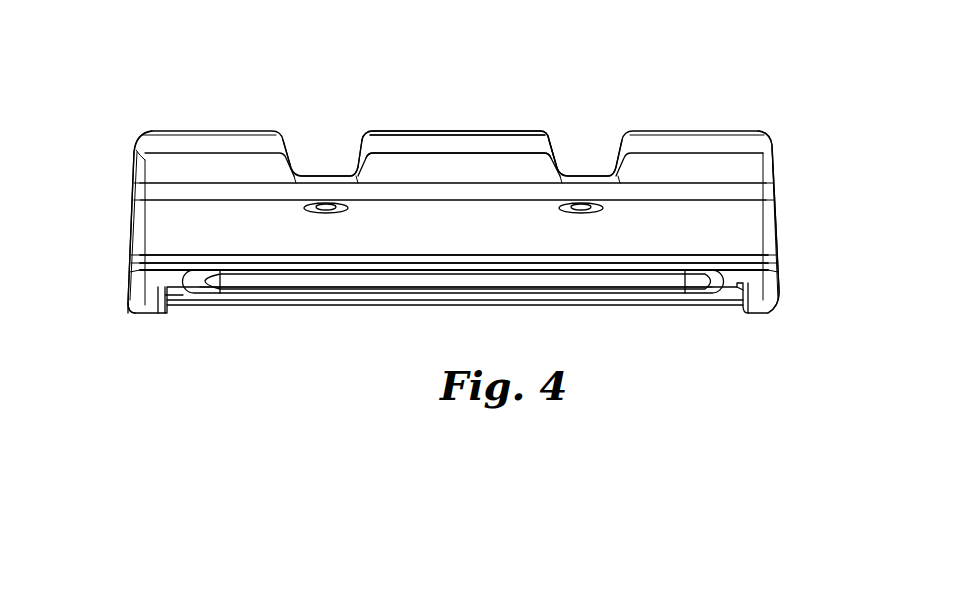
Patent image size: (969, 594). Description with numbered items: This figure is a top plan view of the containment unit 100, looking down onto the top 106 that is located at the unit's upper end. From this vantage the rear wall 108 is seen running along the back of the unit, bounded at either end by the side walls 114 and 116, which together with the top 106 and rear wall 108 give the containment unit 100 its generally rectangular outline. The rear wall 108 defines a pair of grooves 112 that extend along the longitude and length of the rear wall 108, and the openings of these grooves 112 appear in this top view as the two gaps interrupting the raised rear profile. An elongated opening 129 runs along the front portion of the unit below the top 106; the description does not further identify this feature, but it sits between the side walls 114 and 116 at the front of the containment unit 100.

The containment unit 100 is at (716, 96).
The top 106 is at (415, 258).
The rear wall 108 is at (443, 128).
The grooves 112 is at (318, 157).
The side wall 114 is at (780, 223).
The side wall 116 is at (128, 180).
The elongated slot 129 is at (663, 280).